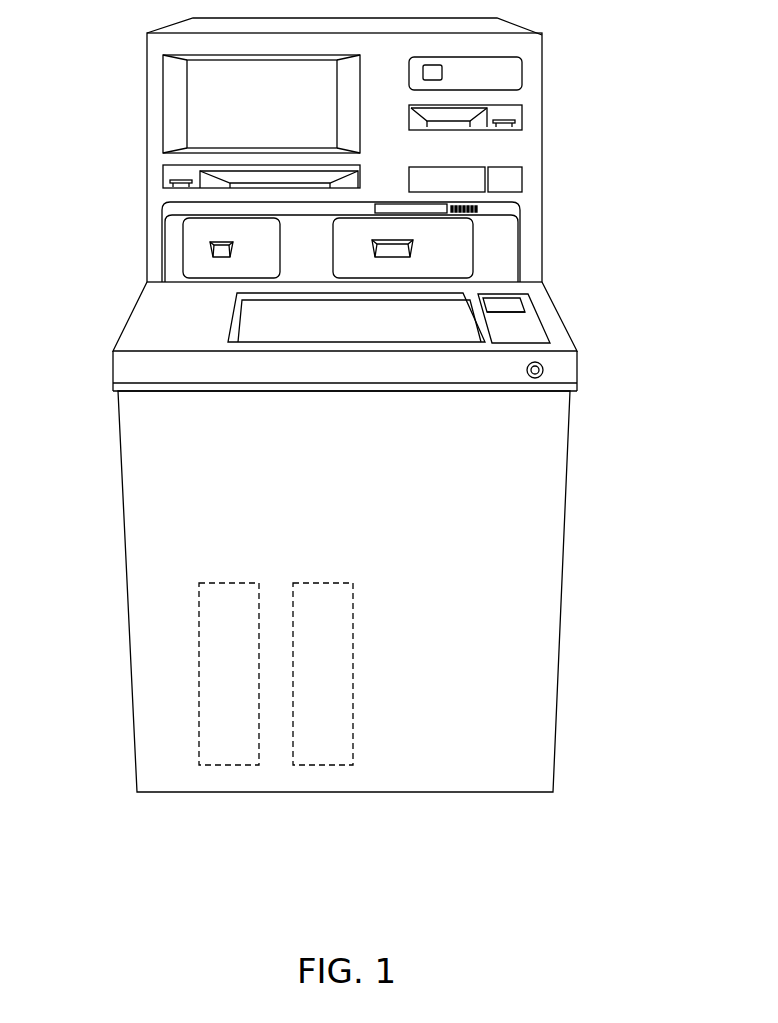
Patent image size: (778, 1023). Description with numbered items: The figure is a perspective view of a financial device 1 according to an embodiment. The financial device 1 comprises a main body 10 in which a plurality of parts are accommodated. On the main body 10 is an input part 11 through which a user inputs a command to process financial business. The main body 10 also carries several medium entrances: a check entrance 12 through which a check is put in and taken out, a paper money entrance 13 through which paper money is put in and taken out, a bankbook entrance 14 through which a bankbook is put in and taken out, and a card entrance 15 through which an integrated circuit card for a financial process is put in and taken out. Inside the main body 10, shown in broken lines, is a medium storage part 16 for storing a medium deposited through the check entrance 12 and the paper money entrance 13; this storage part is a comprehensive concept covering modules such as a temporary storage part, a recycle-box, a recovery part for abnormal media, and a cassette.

The financial device 1 is at (113, 201).
The main body 10 is at (555, 541).
The input part 11 is at (457, 323).
The check entrance 12 is at (170, 252).
The paper money entrance 13 is at (488, 252).
The bankbook entrance 14 is at (240, 177).
The card entrance 15 is at (485, 115).
The medium storage part 16 is at (323, 765).